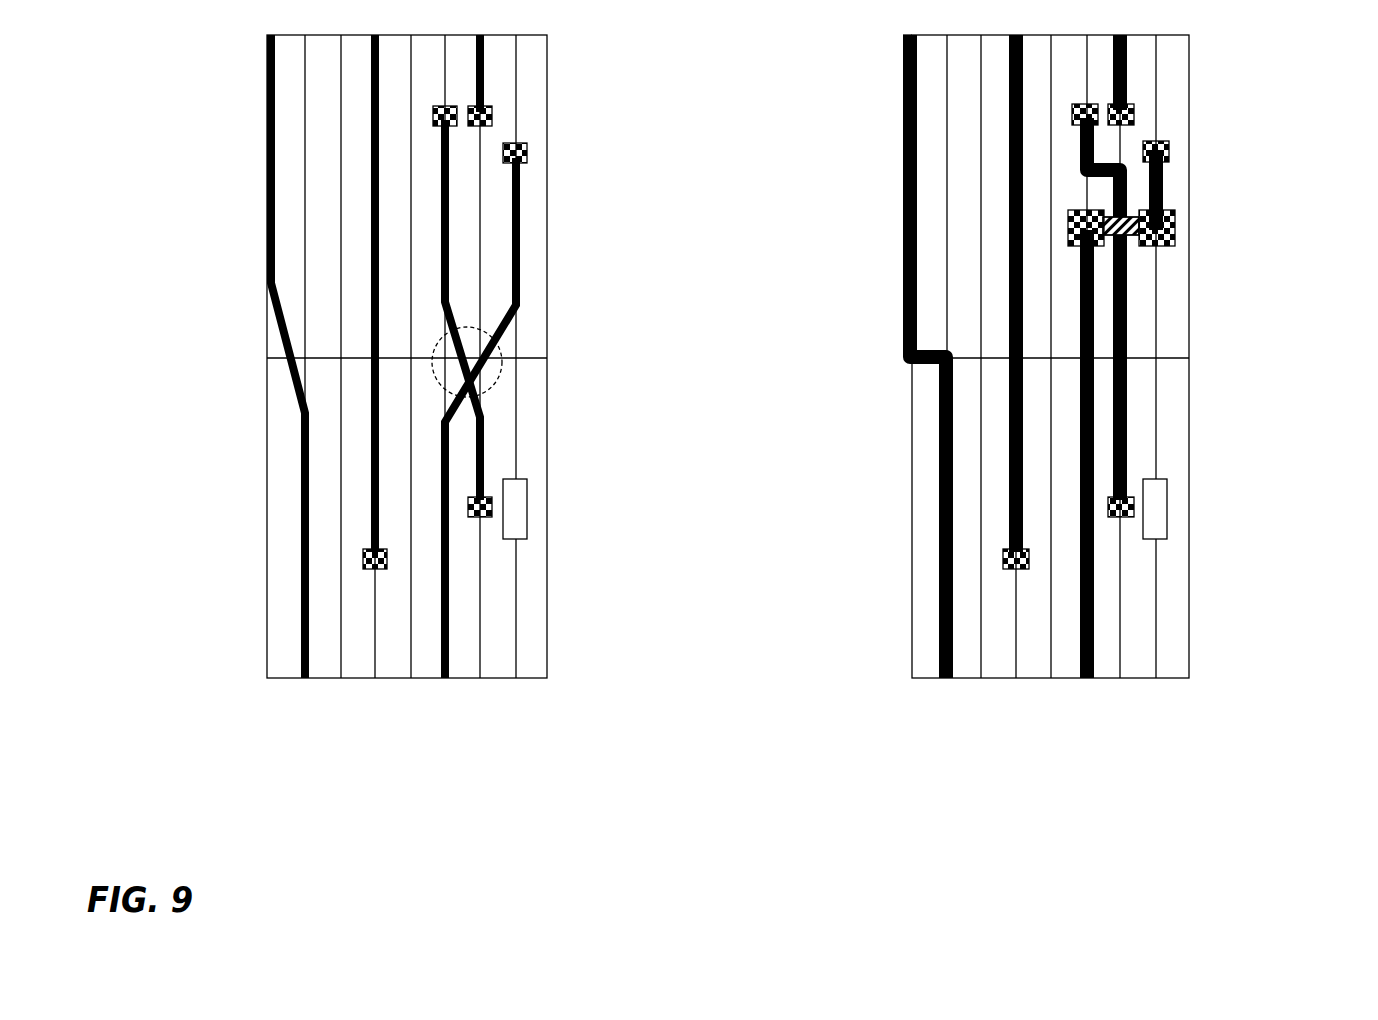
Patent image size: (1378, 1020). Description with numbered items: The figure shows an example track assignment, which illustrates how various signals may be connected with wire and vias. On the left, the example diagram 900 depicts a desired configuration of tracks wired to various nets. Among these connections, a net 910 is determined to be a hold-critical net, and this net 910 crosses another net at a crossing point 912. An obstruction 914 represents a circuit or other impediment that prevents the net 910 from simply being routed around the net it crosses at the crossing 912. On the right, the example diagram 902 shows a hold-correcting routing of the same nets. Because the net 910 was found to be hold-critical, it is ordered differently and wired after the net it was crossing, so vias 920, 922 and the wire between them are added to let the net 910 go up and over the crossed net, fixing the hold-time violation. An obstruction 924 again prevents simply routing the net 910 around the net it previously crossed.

The example track assignment diagram 900 is at (378, 356).
The hold-correcting routing diagram 902 is at (1091, 356).
The hold-critical net 910 is at (518, 194).
The crossing point 912 is at (503, 363).
The obstruction 914 is at (527, 509).
The via 920 is at (1175, 228).
The via 922 is at (1068, 227).
The obstruction 924 is at (1167, 509).